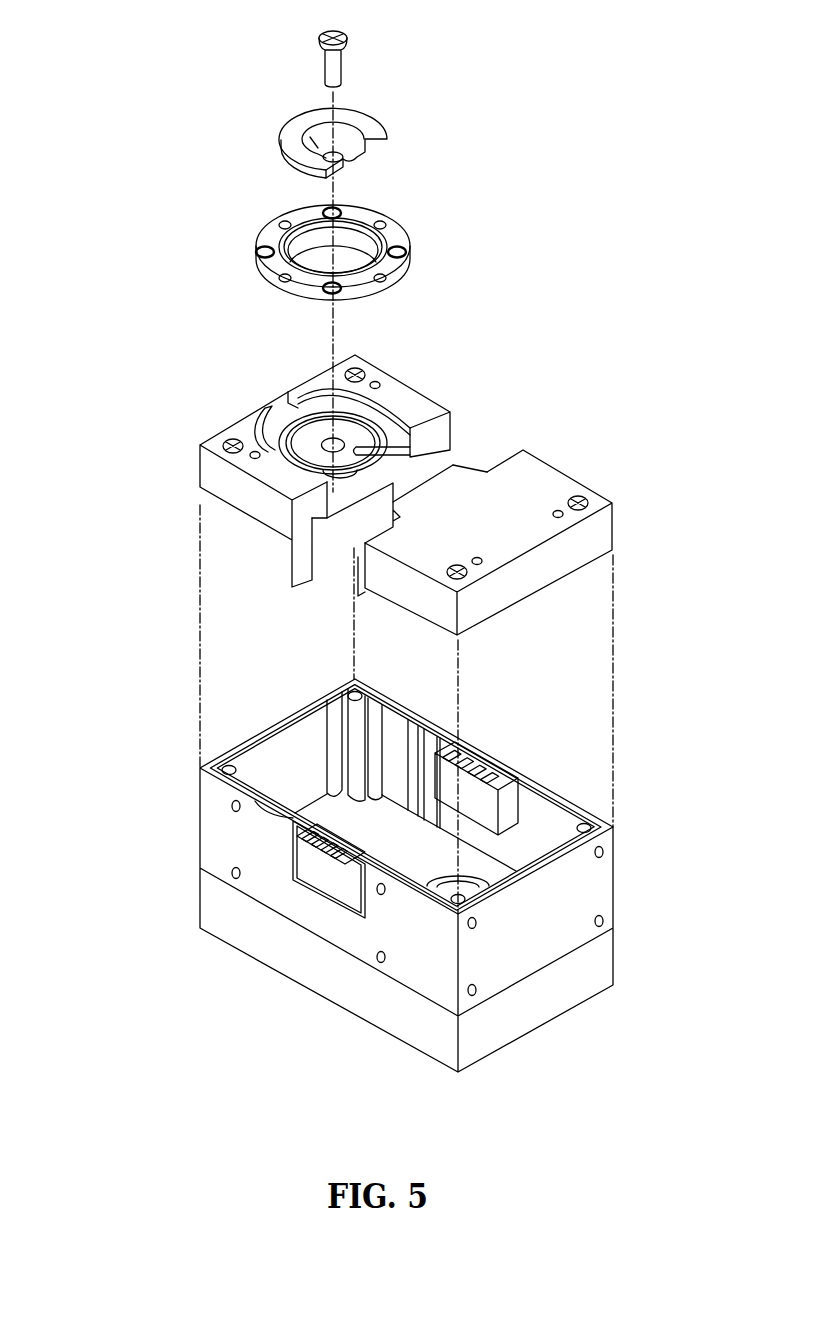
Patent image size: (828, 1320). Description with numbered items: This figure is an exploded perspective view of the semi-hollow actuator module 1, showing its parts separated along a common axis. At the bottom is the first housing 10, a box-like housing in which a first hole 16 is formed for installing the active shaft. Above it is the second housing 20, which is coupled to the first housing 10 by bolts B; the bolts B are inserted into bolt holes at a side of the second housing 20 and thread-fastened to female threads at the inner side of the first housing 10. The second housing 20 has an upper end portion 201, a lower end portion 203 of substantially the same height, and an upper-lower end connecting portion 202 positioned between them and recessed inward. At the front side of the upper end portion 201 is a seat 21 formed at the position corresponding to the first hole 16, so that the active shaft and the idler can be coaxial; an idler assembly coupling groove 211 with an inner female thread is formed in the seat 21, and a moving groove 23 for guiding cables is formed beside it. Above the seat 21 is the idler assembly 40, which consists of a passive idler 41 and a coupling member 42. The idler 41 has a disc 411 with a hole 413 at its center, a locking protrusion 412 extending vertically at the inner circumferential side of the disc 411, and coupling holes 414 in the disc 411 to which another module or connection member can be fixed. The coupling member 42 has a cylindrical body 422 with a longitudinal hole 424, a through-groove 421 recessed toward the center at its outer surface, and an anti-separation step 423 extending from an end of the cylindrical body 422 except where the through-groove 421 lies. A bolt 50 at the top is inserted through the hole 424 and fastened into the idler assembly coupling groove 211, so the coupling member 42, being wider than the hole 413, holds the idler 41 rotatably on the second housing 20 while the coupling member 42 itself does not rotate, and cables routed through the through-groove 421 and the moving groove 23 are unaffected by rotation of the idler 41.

The semi-hollow actuator module 1 is at (550, 130).
The first housing 10 is at (211, 746).
The first hole 16 is at (383, 860).
The second housing 20 is at (243, 386).
The upper end portion 201 is at (212, 464).
The upper-lower end connecting portion 202 is at (432, 465).
The lower end portion 203 is at (531, 465).
The seat 21 is at (383, 395).
The idler assembly coupling groove 211 is at (338, 438).
The moving groove 23 is at (347, 497).
The idler assembly 40 is at (475, 107).
The idler 41 is at (412, 214).
The disc 411 is at (285, 278).
The locking protrusion 412 is at (305, 238).
The hole 413 is at (325, 265).
The coupling holes 414 is at (257, 250).
The coupling member 42 is at (404, 130).
The through-groove 421 is at (328, 176).
The cylindrical body 422 is at (312, 138).
The anti-separation step 423 is at (300, 119).
The hole 424 is at (283, 150).
The bolt 50 is at (348, 40).
The bolts B is at (591, 494).